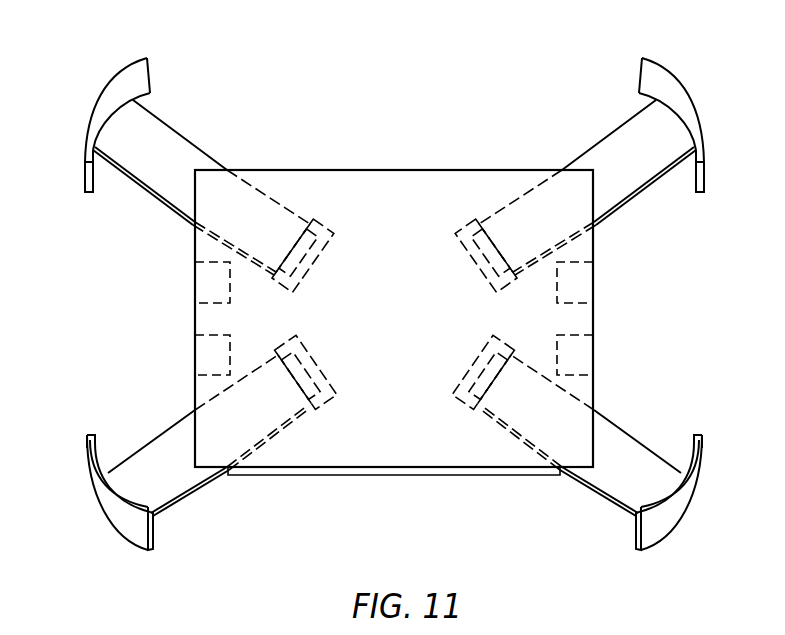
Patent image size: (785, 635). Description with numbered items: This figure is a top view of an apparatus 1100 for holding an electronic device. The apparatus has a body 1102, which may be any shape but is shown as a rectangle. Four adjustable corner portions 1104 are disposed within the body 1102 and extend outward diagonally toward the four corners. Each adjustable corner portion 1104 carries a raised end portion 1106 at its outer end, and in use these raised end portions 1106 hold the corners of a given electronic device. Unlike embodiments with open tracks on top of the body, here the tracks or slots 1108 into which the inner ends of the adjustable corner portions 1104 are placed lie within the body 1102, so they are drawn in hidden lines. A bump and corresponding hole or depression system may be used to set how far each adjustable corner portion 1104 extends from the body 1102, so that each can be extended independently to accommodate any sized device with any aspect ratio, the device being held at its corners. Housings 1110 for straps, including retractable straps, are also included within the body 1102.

The apparatus for holding an electronic device 1100 is at (502, 73).
The body 1102 is at (342, 169).
The adjustable corner portion 1104 is at (160, 117).
The raised end portion 1106 is at (106, 90).
The tracks or slots 1108 is at (317, 273).
The housings for straps 1110 is at (580, 283).